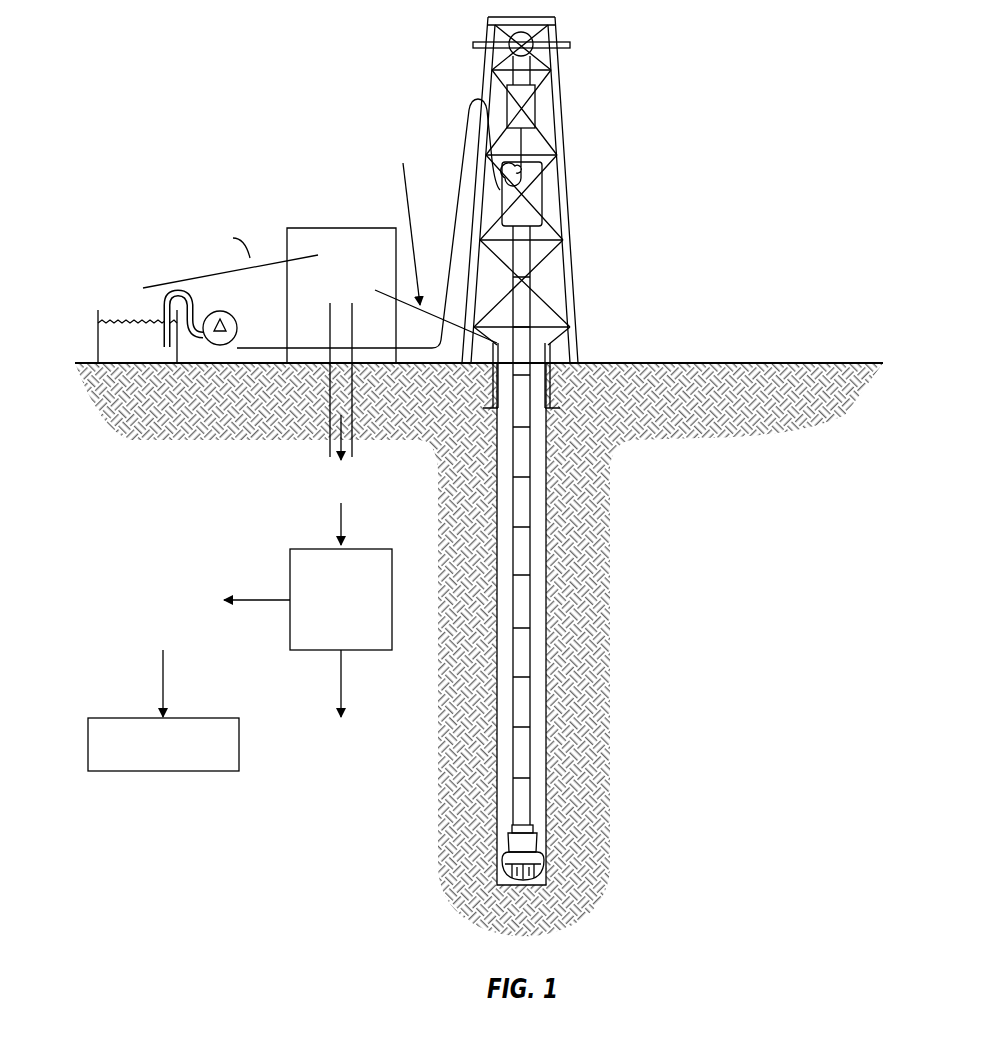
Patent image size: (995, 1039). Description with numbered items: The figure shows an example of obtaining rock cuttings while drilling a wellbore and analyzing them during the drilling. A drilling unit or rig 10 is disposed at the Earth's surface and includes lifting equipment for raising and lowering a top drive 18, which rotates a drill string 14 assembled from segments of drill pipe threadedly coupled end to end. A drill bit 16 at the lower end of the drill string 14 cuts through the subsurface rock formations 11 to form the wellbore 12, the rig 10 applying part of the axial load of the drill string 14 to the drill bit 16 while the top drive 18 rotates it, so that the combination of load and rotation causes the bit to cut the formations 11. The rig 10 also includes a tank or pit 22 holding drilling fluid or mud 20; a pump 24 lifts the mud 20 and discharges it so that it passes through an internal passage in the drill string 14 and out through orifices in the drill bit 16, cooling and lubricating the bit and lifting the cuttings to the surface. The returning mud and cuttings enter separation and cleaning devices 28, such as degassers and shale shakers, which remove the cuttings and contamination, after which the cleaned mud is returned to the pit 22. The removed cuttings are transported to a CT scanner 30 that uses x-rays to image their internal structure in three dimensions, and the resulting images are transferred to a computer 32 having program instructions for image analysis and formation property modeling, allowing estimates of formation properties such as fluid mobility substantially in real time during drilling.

The drilling unit or rig 10 is at (565, 114).
The subsurface rock formations 11 is at (729, 553).
The wellbore 12 is at (503, 793).
The drill string 14 is at (523, 415).
The drill bit 16 is at (540, 866).
The top drive 18 is at (569, 181).
The drilling fluid (mud) 20 is at (127, 337).
The tank or pit 22 is at (98, 337).
The pump 24 is at (230, 312).
The separation and cleaning devices 28 is at (335, 240).
The computer tomographic (CT) scanner 30 is at (300, 651).
The computer 32 is at (100, 772).